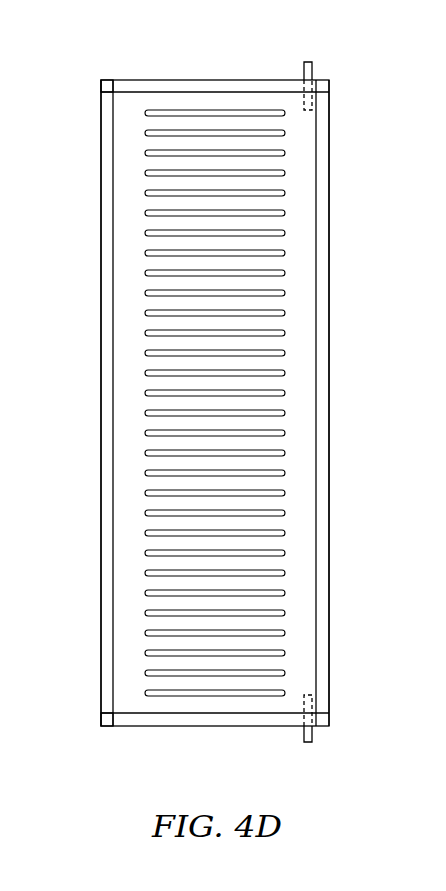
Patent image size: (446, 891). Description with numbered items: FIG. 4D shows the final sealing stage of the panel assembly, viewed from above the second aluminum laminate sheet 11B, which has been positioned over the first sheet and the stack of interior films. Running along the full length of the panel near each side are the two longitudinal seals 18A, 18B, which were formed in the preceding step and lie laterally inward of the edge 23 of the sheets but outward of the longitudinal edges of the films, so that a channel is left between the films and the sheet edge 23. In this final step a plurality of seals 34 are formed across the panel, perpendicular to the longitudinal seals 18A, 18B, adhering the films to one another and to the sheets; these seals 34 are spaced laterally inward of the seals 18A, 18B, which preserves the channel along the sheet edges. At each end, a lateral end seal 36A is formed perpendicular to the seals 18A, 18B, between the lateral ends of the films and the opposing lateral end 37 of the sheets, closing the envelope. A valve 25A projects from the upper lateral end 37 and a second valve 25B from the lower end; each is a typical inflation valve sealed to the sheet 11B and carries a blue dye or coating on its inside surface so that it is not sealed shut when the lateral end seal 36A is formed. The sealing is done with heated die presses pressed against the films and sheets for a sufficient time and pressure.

The second aluminum laminate sheet 11B is at (294, 713).
The longitudinal seal 18A is at (113, 228).
The longitudinal seal 18B is at (316, 228).
The edge of the sheets 23 is at (101, 300).
The valve 25A is at (313, 67).
The valve 25B is at (313, 736).
The seals 34 is at (284, 190).
The lateral end seal 36A is at (137, 92).
The lateral end of the sheets 37 is at (222, 80).